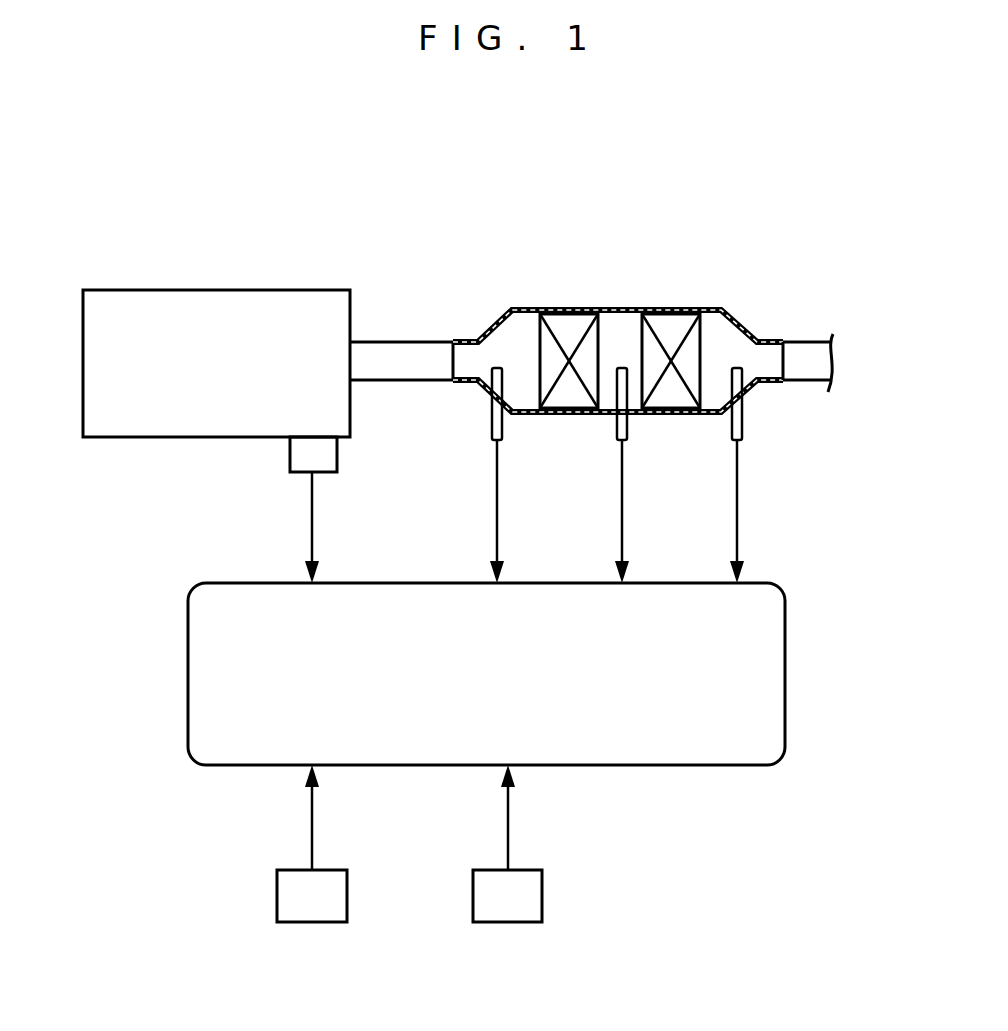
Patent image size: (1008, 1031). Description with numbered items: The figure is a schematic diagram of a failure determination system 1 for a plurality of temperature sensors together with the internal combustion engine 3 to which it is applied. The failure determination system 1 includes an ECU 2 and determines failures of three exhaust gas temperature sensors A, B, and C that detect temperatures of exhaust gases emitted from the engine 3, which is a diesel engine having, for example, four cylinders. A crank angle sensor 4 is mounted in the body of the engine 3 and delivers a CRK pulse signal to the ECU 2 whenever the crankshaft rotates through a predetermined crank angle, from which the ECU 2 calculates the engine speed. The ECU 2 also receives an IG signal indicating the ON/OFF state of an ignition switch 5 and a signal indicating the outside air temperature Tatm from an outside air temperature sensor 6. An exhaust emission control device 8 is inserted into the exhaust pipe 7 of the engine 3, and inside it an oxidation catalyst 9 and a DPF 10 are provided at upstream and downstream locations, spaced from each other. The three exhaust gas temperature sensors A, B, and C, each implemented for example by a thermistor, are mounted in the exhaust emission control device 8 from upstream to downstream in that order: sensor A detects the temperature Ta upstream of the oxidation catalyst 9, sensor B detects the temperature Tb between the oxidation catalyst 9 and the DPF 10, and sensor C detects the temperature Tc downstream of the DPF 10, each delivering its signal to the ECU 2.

The failure determination system 1 is at (720, 812).
The ECU 2 is at (785, 683).
The internal combustion engine 3 is at (110, 437).
The crank angle sensor 4 is at (337, 453).
The ignition switch 5 is at (315, 922).
The outside air temperature sensor 6 is at (513, 922).
The exhaust pipe 7 is at (397, 340).
The exhaust emission control device 8 is at (502, 298).
The oxidation catalyst 9 is at (565, 322).
The DPF 10 is at (668, 322).
The exhaust gas temperature sensor A is at (502, 426).
The exhaust gas temperature sensor B is at (627, 428).
The exhaust gas temperature sensor C is at (742, 428).